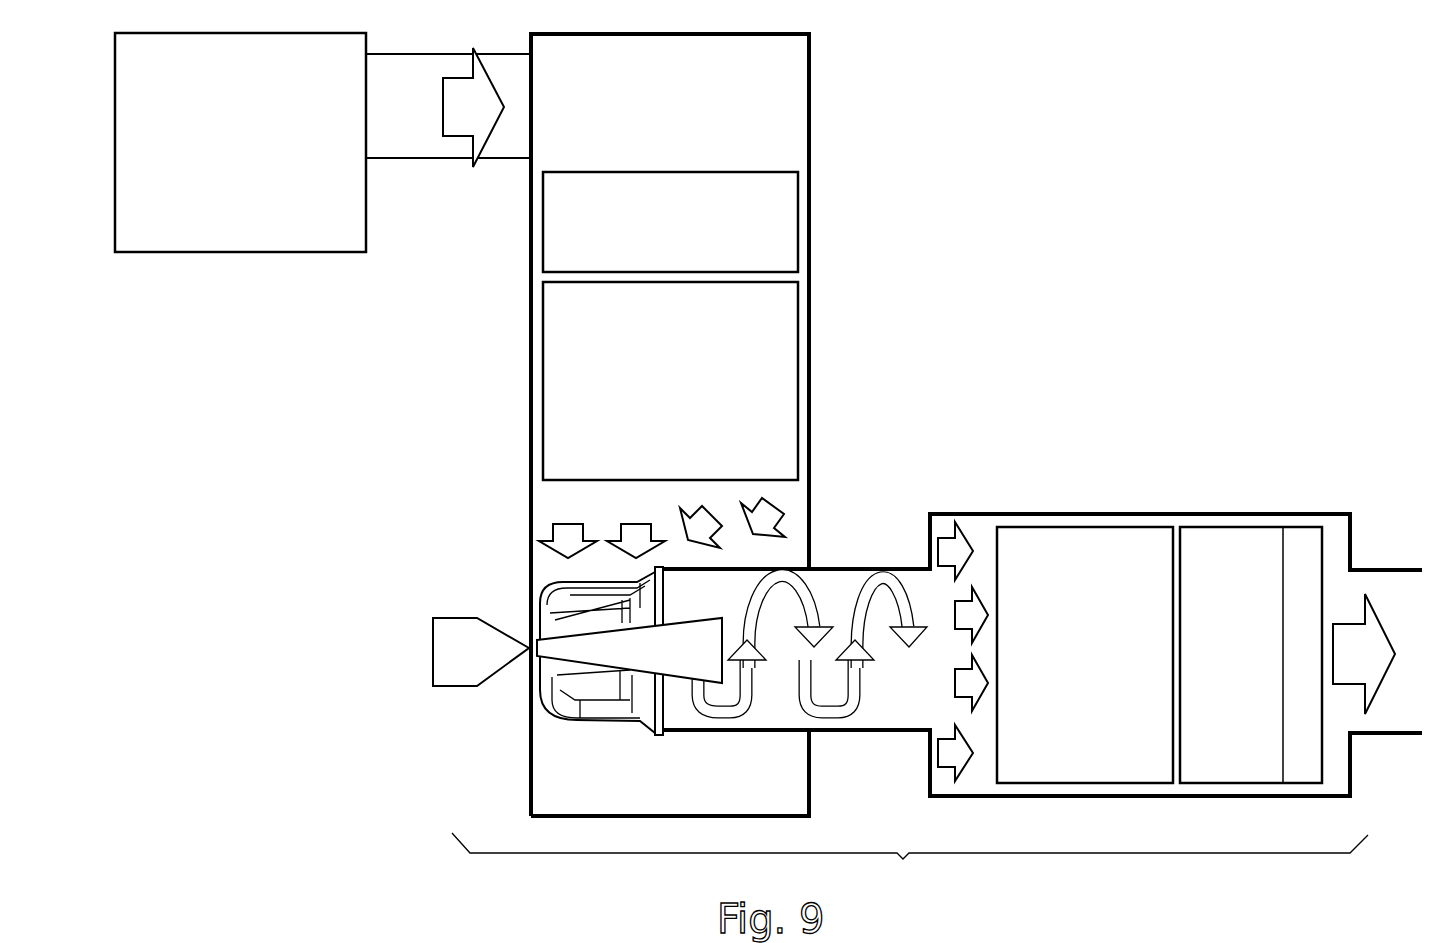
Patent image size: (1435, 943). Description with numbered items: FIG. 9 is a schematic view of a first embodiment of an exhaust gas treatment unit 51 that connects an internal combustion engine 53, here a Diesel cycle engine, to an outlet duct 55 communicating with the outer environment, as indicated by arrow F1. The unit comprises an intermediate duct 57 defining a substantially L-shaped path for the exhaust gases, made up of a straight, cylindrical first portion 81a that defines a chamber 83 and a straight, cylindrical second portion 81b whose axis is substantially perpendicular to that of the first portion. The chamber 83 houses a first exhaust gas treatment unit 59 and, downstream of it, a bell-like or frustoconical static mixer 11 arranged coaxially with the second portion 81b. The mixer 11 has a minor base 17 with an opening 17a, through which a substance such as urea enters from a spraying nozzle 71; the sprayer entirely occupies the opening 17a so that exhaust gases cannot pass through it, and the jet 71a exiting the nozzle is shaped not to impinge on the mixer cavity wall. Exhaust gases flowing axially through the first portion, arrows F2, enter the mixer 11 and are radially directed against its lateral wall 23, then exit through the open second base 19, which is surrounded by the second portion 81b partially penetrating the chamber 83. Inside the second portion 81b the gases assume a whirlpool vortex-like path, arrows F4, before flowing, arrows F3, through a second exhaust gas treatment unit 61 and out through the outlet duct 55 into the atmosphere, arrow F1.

The internal combustion engine 53 is at (255, 158).
The first portion of the intermediate duct 81a is at (809, 100).
The first exhaust gas treatment unit 59 is at (765, 205).
The second portion of the intermediate duct 81b is at (902, 550).
The chamber 83 is at (545, 500).
The static mixer 11 is at (521, 678).
The minor base 17 is at (544, 716).
The opening of the minor base 17a is at (552, 618).
The lateral wall of the mixer 23 is at (585, 733).
The second base 19 is at (672, 710).
The spraying nozzle 71 is at (481, 666).
The jet of substance 71a is at (699, 667).
The exhaust gas treatment unit 51 is at (1087, 392).
The second exhaust gas treatment unit 61 is at (1097, 548).
The outlet duct 55 is at (1383, 736).
The intermediate duct 57 is at (910, 864).
The outlet flow arrow F1 is at (1378, 620).
The exhaust gas flow arrows F2 is at (788, 530).
The exhaust gas flow arrows F3 is at (962, 538).
The vortex flow arrows F4 is at (860, 697).